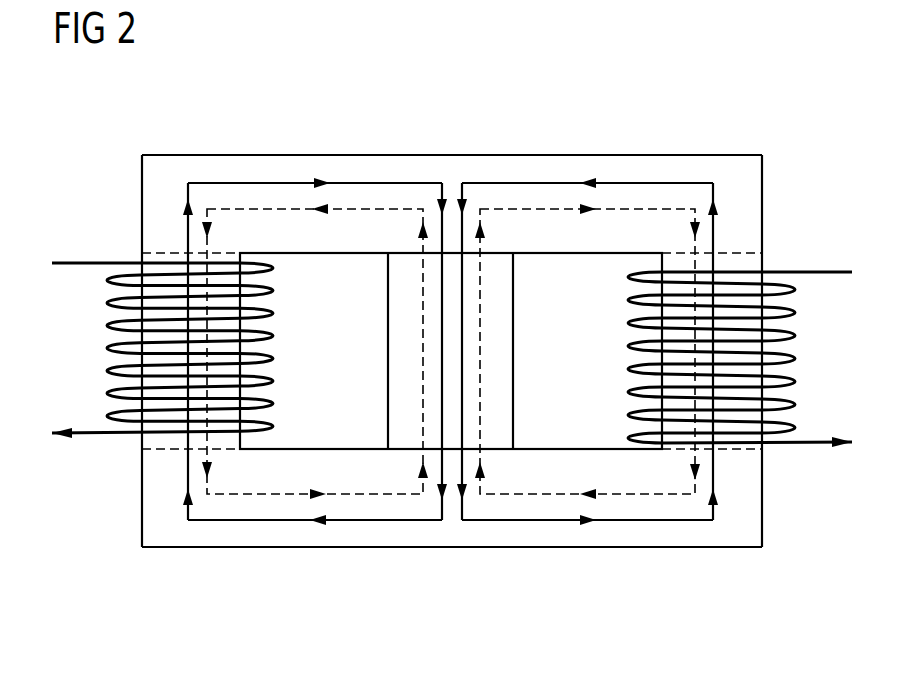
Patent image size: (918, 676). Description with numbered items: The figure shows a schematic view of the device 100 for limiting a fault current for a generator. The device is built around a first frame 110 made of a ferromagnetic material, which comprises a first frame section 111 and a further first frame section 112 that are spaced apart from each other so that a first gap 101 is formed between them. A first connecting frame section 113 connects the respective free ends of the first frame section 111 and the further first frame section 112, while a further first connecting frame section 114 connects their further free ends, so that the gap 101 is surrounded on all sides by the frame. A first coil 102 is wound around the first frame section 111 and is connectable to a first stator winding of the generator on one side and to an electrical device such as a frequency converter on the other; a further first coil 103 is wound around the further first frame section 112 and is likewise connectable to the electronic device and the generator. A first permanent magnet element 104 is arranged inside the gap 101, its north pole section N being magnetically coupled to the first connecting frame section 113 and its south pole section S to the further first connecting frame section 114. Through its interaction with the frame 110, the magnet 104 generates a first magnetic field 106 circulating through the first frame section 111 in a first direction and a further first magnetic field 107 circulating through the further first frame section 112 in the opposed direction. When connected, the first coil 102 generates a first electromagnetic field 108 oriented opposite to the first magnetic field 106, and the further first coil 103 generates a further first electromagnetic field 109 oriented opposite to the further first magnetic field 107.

The device for limiting a fault current 100 is at (400, 97).
The first gap 101 is at (350, 361).
The first coil 102 is at (85, 440).
The further first coil 103 is at (807, 445).
The first permanent magnet element 104 is at (403, 303).
The first magnetic field 106 is at (287, 208).
The further first magnetic field 107 is at (543, 209).
The first electromagnetic field 108 is at (348, 183).
The further first electromagnetic field 109 is at (625, 183).
The first frame 110 is at (458, 155).
The first frame section 111 is at (165, 437).
The further first frame section 112 is at (740, 262).
The first connecting frame section 113 is at (697, 155).
The further first connecting frame section 114 is at (498, 547).